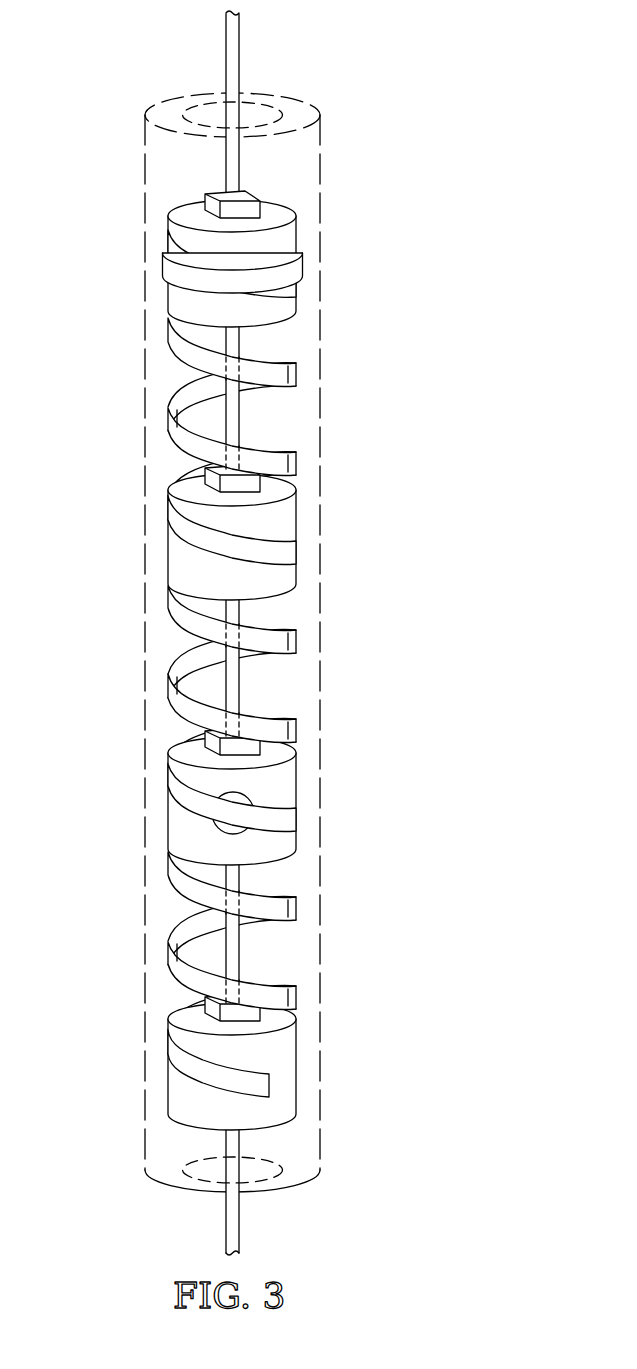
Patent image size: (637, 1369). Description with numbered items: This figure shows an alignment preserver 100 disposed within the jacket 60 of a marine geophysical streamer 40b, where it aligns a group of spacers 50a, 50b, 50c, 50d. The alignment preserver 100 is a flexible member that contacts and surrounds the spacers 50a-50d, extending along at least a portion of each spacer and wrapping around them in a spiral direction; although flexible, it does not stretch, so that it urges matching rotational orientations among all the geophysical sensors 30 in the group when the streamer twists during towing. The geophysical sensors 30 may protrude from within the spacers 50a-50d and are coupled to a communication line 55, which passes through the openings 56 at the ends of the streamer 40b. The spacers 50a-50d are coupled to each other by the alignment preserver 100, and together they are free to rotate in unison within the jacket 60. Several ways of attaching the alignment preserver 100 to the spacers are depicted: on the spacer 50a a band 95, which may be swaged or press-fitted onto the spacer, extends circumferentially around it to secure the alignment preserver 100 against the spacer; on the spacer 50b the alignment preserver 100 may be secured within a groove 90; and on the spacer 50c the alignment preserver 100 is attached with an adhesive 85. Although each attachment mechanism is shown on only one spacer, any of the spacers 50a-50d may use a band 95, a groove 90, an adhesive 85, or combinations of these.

The streamer 40b is at (416, 154).
The communication line 55 is at (240, 38).
The opening 56 is at (205, 125).
The jacket 60 is at (145, 140).
The geophysical sensor 30 is at (217, 198).
The band 95 is at (303, 263).
The spacer 50a is at (190, 302).
The spacer 50b is at (190, 570).
The spacer 50c is at (270, 780).
The spacer 50d is at (190, 1102).
The alignment preserver 100 is at (233, 633).
The groove 90 is at (265, 528).
The adhesive 85 is at (220, 836).